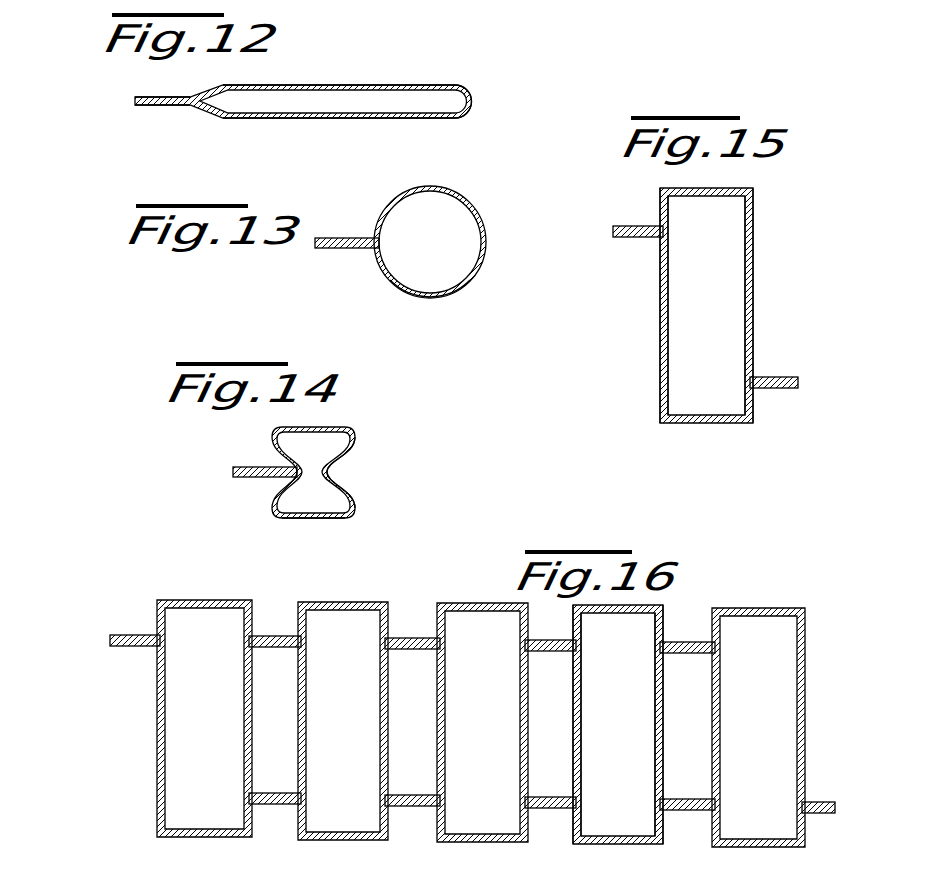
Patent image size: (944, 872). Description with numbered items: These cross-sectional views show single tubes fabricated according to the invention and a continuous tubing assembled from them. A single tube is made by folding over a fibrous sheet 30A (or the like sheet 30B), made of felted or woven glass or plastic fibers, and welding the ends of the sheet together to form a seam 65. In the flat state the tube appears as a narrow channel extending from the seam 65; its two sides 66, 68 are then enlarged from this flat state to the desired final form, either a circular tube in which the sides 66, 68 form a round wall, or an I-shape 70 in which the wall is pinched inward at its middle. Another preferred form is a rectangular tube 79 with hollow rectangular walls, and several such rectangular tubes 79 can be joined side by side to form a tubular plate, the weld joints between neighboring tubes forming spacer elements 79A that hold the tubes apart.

In FIG. 12, the fibrous mass 30A is at (303, 64).
In FIG. 15, the fibrous mass 30A is at (784, 305).
In FIG. 16, the fibrous mass 30A is at (682, 724).
In FIG. 15, the fibrous mass 30B is at (626, 305).
In FIG. 16, the fibrous mass 30B is at (558, 724).
In FIG. 12, the seam 65 is at (146, 128).
In FIG. 13, the seam 65 is at (330, 268).
In FIG. 14, the seam 65 is at (244, 495).
In FIG. 12, the side of the channel 66 is at (347, 132).
In FIG. 13, the side of the channel 66 is at (436, 313).
In FIG. 14, the side of the channel 66 is at (293, 545).
In FIG. 12, the side of the channel 68 is at (355, 71).
In FIG. 13, the side of the channel 68 is at (446, 235).
In FIG. 14, the side of the channel 68 is at (340, 459).
In FIG. 14, the I-shape 70 is at (367, 472).
In FIG. 15, the rectangular tube 79 is at (693, 336).
In FIG. 16, the rectangular tube 79 is at (443, 723).
In FIG. 15, the spacer element 79A is at (703, 280).
In FIG. 16, the spacer element 79A is at (454, 690).